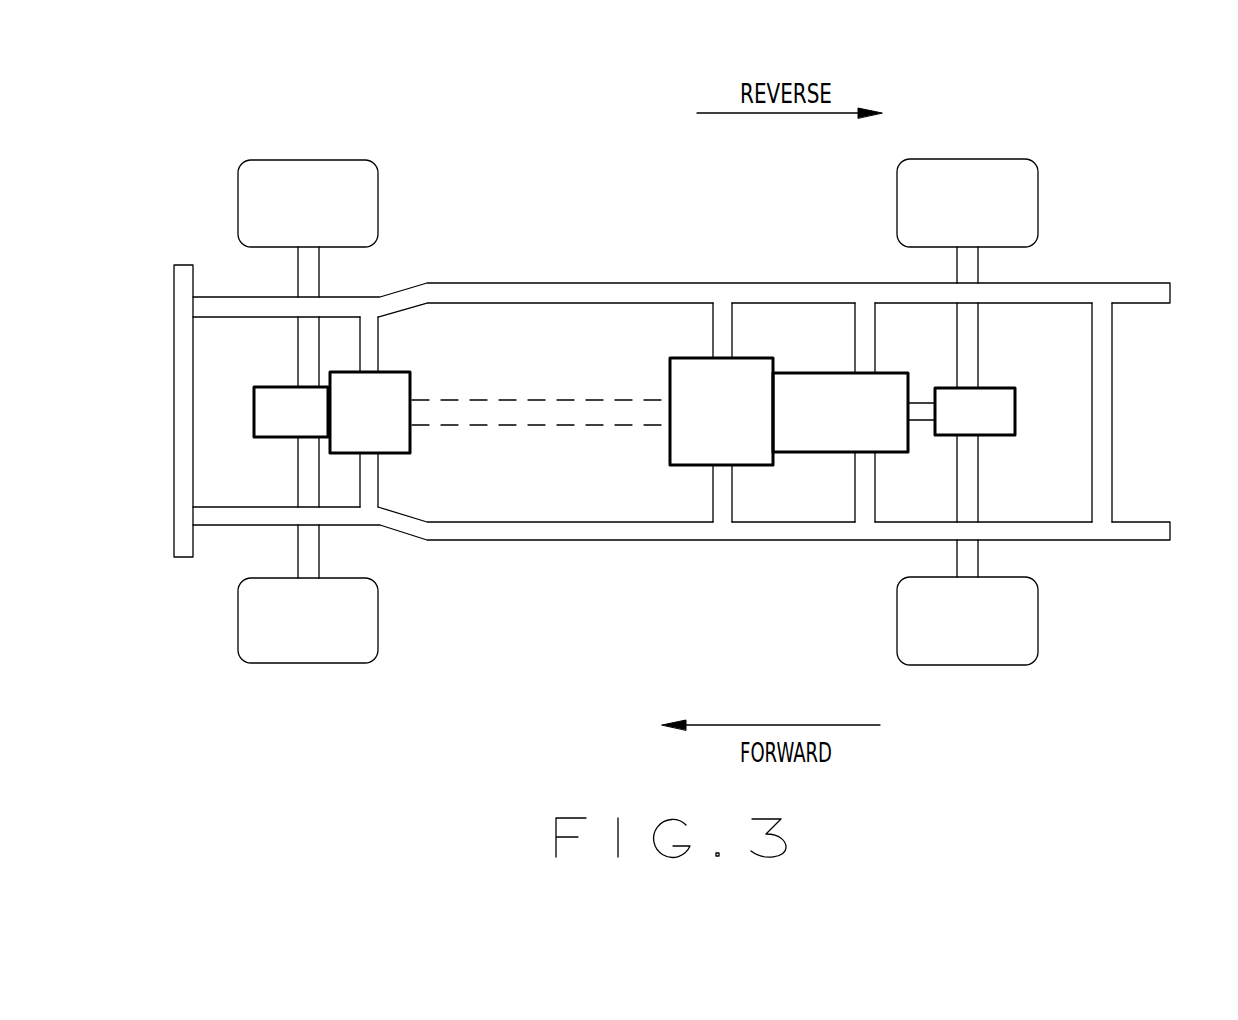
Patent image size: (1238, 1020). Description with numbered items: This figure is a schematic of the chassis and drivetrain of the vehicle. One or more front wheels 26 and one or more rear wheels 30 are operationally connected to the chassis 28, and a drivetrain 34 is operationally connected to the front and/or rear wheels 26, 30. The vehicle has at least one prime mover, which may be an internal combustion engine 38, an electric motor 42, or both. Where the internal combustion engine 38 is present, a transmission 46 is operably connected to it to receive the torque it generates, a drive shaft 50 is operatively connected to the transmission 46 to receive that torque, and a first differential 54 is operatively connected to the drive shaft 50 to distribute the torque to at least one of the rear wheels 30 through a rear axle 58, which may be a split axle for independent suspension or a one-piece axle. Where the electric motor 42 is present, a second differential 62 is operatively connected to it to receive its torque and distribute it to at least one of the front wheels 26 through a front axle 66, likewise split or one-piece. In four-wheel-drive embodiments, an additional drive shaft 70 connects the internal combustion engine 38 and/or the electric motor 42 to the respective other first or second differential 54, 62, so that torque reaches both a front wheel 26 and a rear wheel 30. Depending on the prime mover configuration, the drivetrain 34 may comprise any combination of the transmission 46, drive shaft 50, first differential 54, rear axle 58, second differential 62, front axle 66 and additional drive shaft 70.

The front wheels 26 is at (298, 182).
The chassis 28 is at (560, 283).
The rear wheels 30 is at (993, 175).
The drivetrain 34 is at (475, 378).
The internal combustion engine 38 is at (672, 438).
The electric motor 42 is at (345, 380).
The transmission 46 is at (795, 433).
The drive shaft 50 is at (927, 408).
The first differential 54 is at (1015, 428).
The rear axle 58 is at (973, 348).
The second differential 62 is at (254, 408).
The front axle 66 is at (308, 347).
The additional drive shaft 70 is at (500, 407).